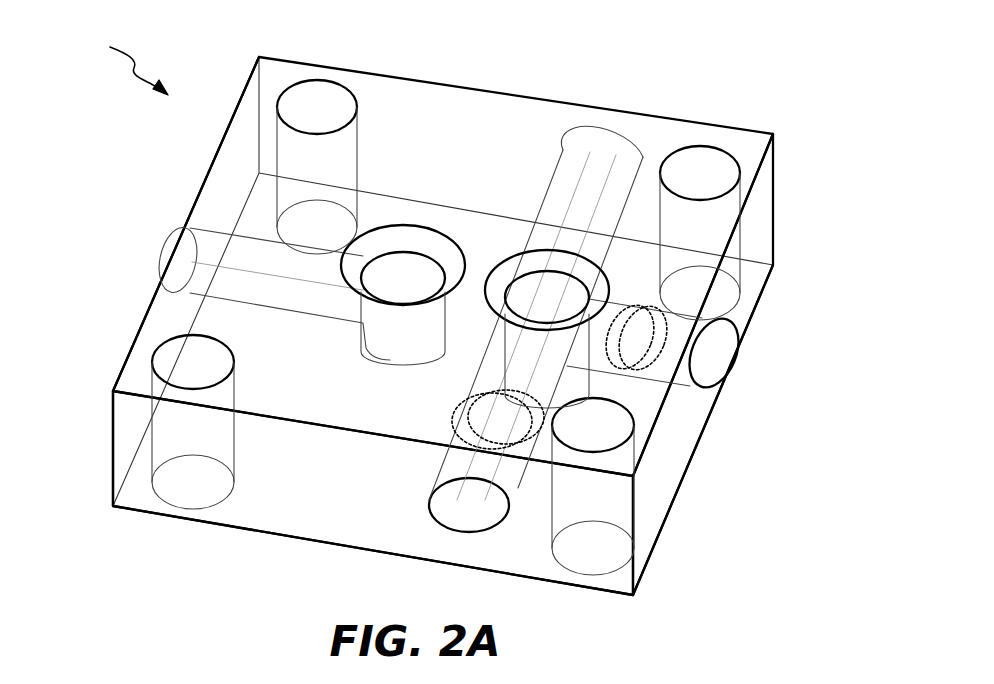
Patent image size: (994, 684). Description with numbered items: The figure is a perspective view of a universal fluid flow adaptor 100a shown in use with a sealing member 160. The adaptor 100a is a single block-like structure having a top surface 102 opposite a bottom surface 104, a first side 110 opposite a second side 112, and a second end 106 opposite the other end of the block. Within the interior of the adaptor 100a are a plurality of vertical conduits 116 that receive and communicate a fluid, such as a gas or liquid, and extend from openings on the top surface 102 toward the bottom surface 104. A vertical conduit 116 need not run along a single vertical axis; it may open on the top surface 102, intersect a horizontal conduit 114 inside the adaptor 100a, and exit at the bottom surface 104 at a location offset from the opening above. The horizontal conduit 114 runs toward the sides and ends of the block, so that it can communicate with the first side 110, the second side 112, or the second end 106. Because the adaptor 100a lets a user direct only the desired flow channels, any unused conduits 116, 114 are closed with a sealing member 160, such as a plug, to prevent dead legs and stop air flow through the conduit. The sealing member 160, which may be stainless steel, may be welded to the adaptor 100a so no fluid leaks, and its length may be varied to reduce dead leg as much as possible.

The universal fluid flow adaptor 100a is at (117, 59).
The top surface 102 is at (556, 122).
The bottom surface 104 is at (692, 455).
The second end 106 is at (272, 484).
The first side 110 is at (765, 232).
The second side 112 is at (152, 306).
The horizontal conduit 114 is at (630, 140).
The vertical conduit 116 is at (398, 256).
The sealing member 160 is at (647, 308).